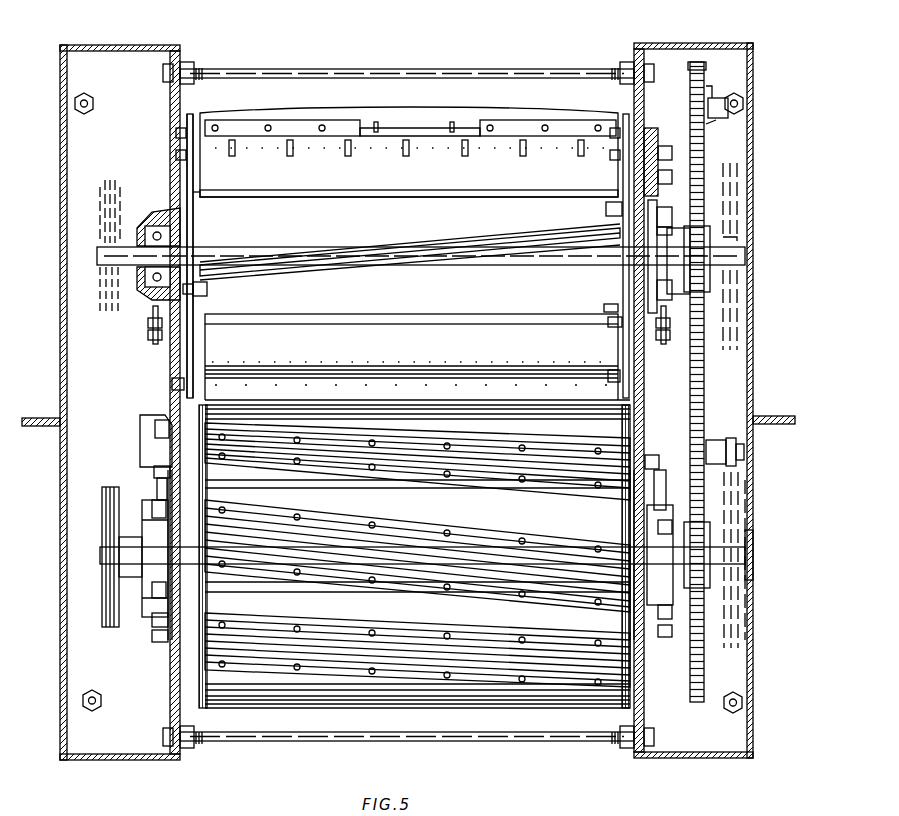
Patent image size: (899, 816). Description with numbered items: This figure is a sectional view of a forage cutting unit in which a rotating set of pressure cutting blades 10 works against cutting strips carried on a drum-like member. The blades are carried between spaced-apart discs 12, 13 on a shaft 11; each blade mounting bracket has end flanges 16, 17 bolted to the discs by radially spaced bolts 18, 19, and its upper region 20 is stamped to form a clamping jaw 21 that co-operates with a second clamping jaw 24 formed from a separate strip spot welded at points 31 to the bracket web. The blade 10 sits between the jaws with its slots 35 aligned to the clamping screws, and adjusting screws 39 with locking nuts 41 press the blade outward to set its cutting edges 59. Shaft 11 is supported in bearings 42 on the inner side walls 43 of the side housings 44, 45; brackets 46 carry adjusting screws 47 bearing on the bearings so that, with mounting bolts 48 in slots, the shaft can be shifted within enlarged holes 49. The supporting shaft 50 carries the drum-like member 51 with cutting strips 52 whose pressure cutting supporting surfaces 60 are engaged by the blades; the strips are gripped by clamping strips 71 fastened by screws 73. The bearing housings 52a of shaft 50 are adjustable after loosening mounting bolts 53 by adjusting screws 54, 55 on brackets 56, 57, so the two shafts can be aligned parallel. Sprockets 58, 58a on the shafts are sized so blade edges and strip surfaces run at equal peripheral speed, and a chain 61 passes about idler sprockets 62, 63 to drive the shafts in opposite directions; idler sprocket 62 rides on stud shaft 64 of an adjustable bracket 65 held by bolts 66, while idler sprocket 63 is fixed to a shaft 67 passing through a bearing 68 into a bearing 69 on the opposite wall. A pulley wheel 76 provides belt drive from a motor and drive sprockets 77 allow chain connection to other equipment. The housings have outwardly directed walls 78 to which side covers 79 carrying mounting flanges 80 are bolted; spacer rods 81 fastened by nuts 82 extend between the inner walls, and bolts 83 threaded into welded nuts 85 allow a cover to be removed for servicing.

The pressure cutting blade 10 is at (440, 112).
The shaft 11 is at (262, 248).
The disc 12 is at (196, 222).
The disc 13 is at (623, 310).
The flange 16 is at (198, 182).
The flange 17 is at (608, 326).
The bolts 18 is at (176, 155).
The bolts 19 is at (630, 104).
The upper region 20 is at (412, 390).
The clamping jaw 21 is at (356, 392).
The second clamping jaw 24 is at (292, 274).
The spot weld points 31 is at (268, 160).
The mounting slots 35 is at (455, 126).
The adjusting screws 39 is at (300, 160).
The locking nut 41 is at (470, 160).
The bearings 42 is at (158, 210).
The inner side walls 43 is at (170, 112).
The side housing 44 is at (104, 47).
The side housing 45 is at (682, 47).
The brackets 46 is at (158, 344).
The adjusting screws 47 is at (150, 334).
The mounting bolts 48 is at (664, 208).
The enlarged holes 49 is at (200, 234).
The supporting shaft 50 is at (98, 540).
The drum-like member 51 is at (186, 660).
The cutting strips 52 is at (474, 482).
The bearing housings 52a is at (150, 500).
The mounting bolts 53 is at (152, 590).
The adjusting screw 54 is at (152, 474).
The adjusting screw 55 is at (160, 642).
The bracket 56 is at (157, 488).
The bracket 57 is at (152, 622).
The sprocket 58 is at (700, 336).
The sprocket 58a is at (752, 498).
The cutting edges 59 is at (378, 104).
The pressure cutting supporting surfaces 60 is at (294, 708).
The chain 61 is at (706, 402).
The idler sprocket 62 is at (700, 90).
The idler sprocket 63 is at (712, 440).
The stud shaft 64 is at (716, 98).
The adjustable bracket 65 is at (660, 130).
The bolts 66 is at (676, 176).
The shaft 67 is at (736, 428).
The bearing 68 is at (740, 474).
The bearing 69 is at (148, 424).
The clamping strips 71 is at (262, 472).
The screws 73 is at (378, 470).
The pulley wheel 76 is at (114, 180).
The drive sprockets 77 is at (724, 160).
The outwardly directed walls 78 is at (122, 748).
The side covers 79 is at (60, 240).
The mounting flanges 80 is at (48, 418).
The rods 81 is at (360, 76).
The nuts 82 is at (170, 64).
The bolts 83 is at (88, 102).
The nuts 85 is at (88, 86).